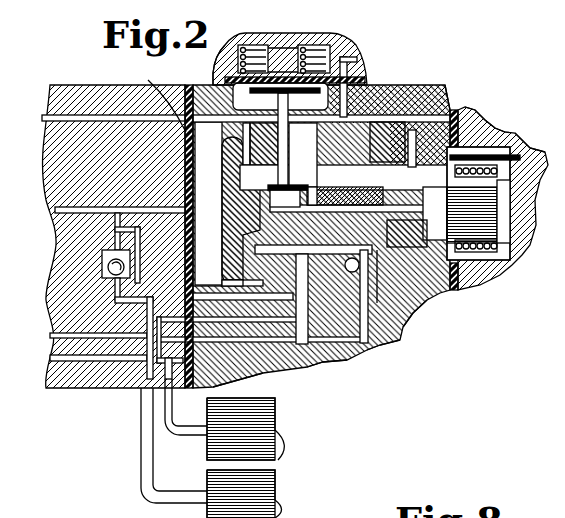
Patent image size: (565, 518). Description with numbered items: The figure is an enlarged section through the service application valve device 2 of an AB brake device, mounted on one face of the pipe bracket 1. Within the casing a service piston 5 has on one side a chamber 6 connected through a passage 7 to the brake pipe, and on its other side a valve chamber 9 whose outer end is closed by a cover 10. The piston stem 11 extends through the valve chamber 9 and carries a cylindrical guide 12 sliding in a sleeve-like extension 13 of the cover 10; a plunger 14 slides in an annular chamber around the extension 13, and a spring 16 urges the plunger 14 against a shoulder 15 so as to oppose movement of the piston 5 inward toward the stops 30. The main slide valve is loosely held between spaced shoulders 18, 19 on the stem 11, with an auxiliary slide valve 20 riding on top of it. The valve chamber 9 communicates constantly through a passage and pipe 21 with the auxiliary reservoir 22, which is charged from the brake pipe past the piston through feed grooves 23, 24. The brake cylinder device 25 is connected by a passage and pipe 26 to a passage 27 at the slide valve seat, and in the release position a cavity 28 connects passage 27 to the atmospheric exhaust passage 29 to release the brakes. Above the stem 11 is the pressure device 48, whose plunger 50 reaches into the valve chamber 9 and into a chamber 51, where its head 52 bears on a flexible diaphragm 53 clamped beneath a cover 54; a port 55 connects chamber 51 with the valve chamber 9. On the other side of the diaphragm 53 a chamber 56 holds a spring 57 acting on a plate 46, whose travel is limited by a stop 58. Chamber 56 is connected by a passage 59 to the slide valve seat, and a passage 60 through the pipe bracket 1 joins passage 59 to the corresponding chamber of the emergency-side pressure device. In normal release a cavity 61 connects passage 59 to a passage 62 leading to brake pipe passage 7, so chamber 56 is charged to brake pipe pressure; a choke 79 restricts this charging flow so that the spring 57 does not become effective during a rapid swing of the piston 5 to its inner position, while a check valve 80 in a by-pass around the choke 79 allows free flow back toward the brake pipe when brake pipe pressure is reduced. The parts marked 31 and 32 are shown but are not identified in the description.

The pipe bracket 1 is at (72, 84).
The service application valve device 2 is at (444, 100).
The service piston 5 is at (222, 150).
The chamber 6 is at (163, 96).
The passage 7 is at (57, 209).
The valve chamber 9 is at (503, 194).
The cover 10 is at (490, 135).
The stem 11 is at (457, 113).
The cylindrical guide 12 is at (500, 213).
The sleeve-like extension 13 is at (528, 191).
The plunger 14 is at (511, 138).
The shoulder 15 is at (492, 128).
The spring 16 is at (522, 156).
The shoulder 18 is at (342, 274).
The shoulder 19 is at (430, 213).
The auxiliary slide valve 20 is at (281, 191).
The passage and pipe 21 is at (268, 288).
The auxiliary reservoir 22 is at (272, 498).
The feed groove 23 is at (191, 85).
The feed groove 24 is at (207, 290).
The brake cylinder device 25 is at (272, 428).
The passage and pipe 26 is at (112, 388).
The passage 27 is at (60, 388).
The cavity 28 is at (404, 339).
The atmospheric exhaust passage 29 is at (373, 352).
The stops 30 is at (283, 158).
The plunger 31 is at (226, 208).
The passage 32 is at (405, 230).
The plate 46 is at (362, 71).
The pressure device 48 is at (308, 28).
The plunger 50 is at (284, 190).
The chamber 51 is at (200, 83).
The head 52 is at (270, 88).
The flexible diaphragm 53 is at (216, 70).
The cover 54 is at (348, 40).
The port 55 is at (313, 172).
The chamber 56 is at (347, 50).
The spring 57 is at (250, 48).
The stop 58 is at (302, 42).
The passage 59 is at (421, 97).
The passage 60 is at (113, 115).
The cavity 61 is at (327, 362).
The passage 62 is at (275, 370).
The choke 79 is at (181, 231).
The check valve 80 is at (181, 258).